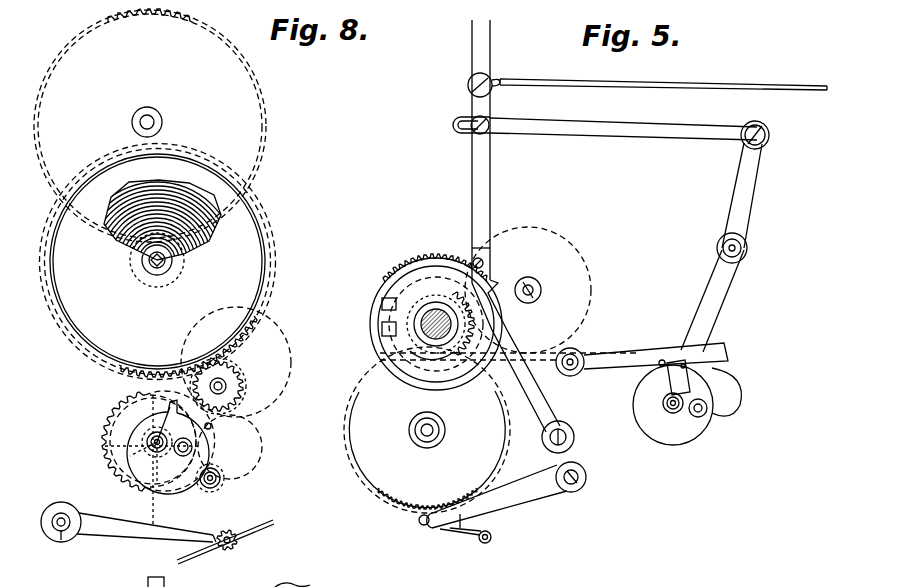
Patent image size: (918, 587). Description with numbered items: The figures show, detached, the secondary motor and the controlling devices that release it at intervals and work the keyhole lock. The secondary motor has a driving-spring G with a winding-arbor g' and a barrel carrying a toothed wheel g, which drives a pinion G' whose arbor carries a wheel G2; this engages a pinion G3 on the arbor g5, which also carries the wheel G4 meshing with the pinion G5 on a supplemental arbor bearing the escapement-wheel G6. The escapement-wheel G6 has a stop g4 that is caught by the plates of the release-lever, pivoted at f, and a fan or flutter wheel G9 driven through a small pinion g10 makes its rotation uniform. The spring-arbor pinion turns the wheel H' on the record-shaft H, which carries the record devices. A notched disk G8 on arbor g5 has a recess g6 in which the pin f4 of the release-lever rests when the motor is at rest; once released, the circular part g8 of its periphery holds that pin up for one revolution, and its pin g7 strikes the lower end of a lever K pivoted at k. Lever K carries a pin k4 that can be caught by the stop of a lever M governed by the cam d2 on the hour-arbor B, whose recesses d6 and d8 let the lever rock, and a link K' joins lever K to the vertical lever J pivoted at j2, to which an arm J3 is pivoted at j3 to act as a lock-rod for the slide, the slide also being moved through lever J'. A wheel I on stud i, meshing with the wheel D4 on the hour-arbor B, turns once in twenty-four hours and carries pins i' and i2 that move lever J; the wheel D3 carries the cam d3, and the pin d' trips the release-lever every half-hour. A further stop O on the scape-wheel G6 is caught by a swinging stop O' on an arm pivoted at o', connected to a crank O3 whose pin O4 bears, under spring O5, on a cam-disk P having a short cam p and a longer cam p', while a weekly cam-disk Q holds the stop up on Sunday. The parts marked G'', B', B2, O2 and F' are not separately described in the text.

In FIG. 8, the wheel H' is at (150, 125).
In FIG. 8, the shaft H is at (161, 117).
In FIG. 8, the driving-spring G is at (158, 262).
In FIG. 8, the toothed wheel g is at (206, 335).
In FIG. 8, the pinion G' is at (157, 259).
In FIG. 8, the winding-arbor g' is at (157, 274).
In FIG. 8, the pinion G'' is at (229, 386).
In FIG. 8, the wheel G2 is at (278, 378).
In FIG. 8, the wheel G4 is at (112, 412).
In FIG. 8, the notched disk G8 is at (135, 466).
In FIG. 5, the notched disk G8 is at (662, 437).
In FIG. 8, the recess g6 is at (168, 408).
In FIG. 5, the recess g6 is at (662, 360).
In FIG. 8, the arbor g5 is at (157, 437).
In FIG. 5, the arbor g5 is at (668, 412).
In FIG. 8, the pin g7 is at (184, 456).
In FIG. 5, the pin g7 is at (708, 413).
In FIG. 8, the pinion G3 is at (110, 452).
In FIG. 8, the stop g4 is at (210, 428).
In FIG. 8, the pinion G5 is at (225, 478).
In FIG. 8, the stop O is at (146, 520).
In FIG. 8, the swinging stop O' is at (142, 520).
In FIG. 8, the pivot o' is at (106, 543).
In FIG. 8, the small pinion g10 is at (232, 552).
In FIG. 8, the fan or flutter wheel G9 is at (227, 542).
In FIG. 8, the escapement-wheel G6 is at (262, 528).
In FIG. 5, the vertical lever J is at (488, 151).
In FIG. 5, the pivot j3 is at (492, 86).
In FIG. 5, the arm J3 is at (701, 86).
In FIG. 5, the link K' is at (611, 122).
In FIG. 5, the lever K is at (754, 195).
In FIG. 5, the pivot k is at (746, 249).
In FIG. 5, the pin k4 is at (690, 366).
In FIG. 5, the lever M is at (612, 362).
In FIG. 5, the pivot f is at (576, 353).
In FIG. 5, the wheel I is at (528, 290).
In FIG. 5, the stud i is at (530, 281).
In FIG. 5, the pin i' is at (524, 312).
In FIG. 5, the pin i2 is at (512, 257).
In FIG. 5, the lever J' is at (516, 332).
In FIG. 5, the pivot j2 is at (570, 433).
In FIG. 5, the wheel D4 is at (440, 296).
In FIG. 5, the wheel D3 is at (396, 259).
In FIG. 5, the cam-surface d3 is at (405, 263).
In FIG. 5, the recess d6 is at (388, 298).
In FIG. 5, the pin d' is at (364, 315).
In FIG. 5, the recess d8 is at (388, 335).
In FIG. 5, the cam-surface d2 is at (385, 346).
In FIG. 5, the inner toothed wheel B' is at (440, 315).
In FIG. 5, the arbor B is at (423, 319).
In FIG. 5, the arbor part B2 is at (407, 328).
In FIG. 5, the cam-disk P is at (370, 480).
In FIG. 5, the short cam p is at (409, 422).
In FIG. 5, the longer cam p' is at (488, 419).
In FIG. 5, the supplemental cam-disk Q is at (495, 470).
In FIG. 5, the arm or crank O3 is at (525, 506).
In FIG. 5, the pivot O2 is at (586, 486).
In FIG. 5, the pin O4 is at (427, 527).
In FIG. 5, the spring O5 is at (484, 544).
In FIG. 5, the pawl F' is at (740, 391).
In FIG. 5, the pin f4 is at (668, 370).
In FIG. 5, the circular part of periphery g8 is at (645, 401).